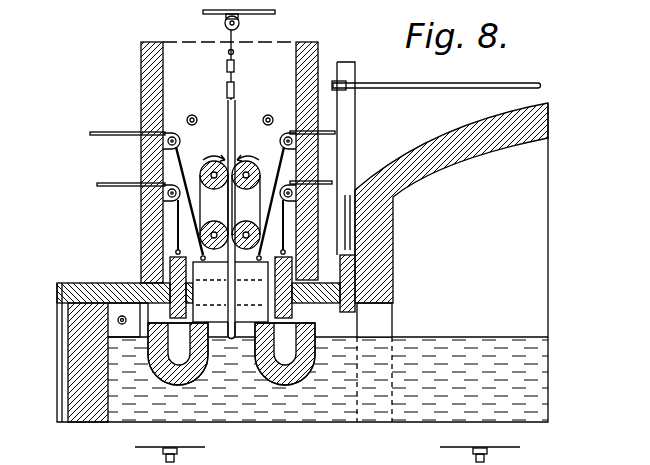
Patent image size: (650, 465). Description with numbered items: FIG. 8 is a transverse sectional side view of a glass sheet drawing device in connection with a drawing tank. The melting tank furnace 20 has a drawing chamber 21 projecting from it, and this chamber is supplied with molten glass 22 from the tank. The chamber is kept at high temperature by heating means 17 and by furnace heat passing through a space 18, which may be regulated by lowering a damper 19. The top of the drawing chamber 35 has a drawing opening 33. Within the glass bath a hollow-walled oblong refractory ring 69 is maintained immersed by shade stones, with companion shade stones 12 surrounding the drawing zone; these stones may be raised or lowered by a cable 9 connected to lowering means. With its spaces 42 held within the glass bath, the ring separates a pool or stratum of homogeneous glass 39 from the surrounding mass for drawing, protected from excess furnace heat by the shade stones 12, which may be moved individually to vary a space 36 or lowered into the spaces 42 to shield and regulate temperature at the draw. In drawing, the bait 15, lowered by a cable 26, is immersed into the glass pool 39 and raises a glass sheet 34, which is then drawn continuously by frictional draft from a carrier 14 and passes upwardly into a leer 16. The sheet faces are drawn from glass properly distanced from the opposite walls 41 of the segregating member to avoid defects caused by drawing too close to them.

The cable 9 is at (102, 132).
The shade stones 12 is at (195, 270).
The carrier 14 is at (211, 168).
The bait 15 is at (236, 88).
The leer 16 is at (141, 66).
The heating means 17 is at (82, 324).
The space 18 is at (383, 322).
The damper 19 is at (356, 272).
The melting tank furnace 20 is at (546, 122).
The drawing chamber 21 is at (74, 364).
The molten glass 22 is at (110, 386).
The cable 26 is at (272, 14).
The drawing opening 33 is at (172, 272).
The glass sheet 34 is at (236, 108).
The top of the drawing chamber 35 is at (92, 286).
The space 36 is at (295, 318).
The pool or stratum of homogeneous glass 39 is at (223, 355).
The opposite walls 41 is at (250, 340).
The spaces 42 is at (175, 360).
The hollow-walled oblong refractory ring 69 is at (290, 387).